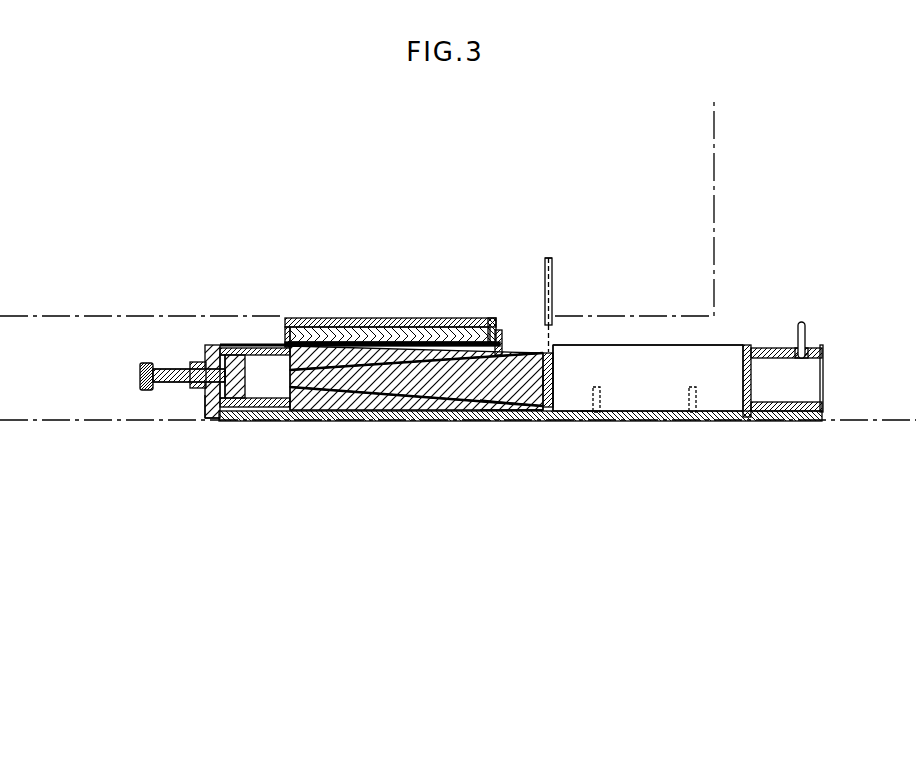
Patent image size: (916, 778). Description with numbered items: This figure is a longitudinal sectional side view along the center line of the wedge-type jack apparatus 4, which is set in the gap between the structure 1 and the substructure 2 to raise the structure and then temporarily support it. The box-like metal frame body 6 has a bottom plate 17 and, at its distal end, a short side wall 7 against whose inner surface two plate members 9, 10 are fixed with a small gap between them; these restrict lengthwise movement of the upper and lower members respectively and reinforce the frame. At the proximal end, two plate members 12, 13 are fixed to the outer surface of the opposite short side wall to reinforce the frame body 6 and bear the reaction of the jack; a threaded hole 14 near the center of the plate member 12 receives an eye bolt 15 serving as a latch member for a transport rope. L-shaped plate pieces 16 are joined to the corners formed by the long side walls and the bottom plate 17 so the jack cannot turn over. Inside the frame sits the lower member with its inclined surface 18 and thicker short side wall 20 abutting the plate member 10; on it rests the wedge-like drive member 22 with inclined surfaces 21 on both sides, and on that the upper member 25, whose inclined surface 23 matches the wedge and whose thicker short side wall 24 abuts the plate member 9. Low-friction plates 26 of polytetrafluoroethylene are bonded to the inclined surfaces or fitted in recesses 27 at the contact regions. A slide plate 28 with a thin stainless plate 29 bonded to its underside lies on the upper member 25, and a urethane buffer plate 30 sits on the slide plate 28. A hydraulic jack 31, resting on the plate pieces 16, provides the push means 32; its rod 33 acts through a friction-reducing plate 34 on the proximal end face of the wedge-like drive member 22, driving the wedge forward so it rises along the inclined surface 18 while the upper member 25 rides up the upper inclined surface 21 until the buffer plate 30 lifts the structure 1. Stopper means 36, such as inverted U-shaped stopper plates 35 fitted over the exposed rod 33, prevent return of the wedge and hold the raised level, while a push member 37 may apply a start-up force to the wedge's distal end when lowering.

The structure 1 is at (357, 206).
The substructure 2 is at (458, 491).
The wedge-type jack apparatus 4 is at (823, 292).
The frame body 6 is at (663, 423).
The short side wall 7 is at (200, 405).
The plate member 9 is at (243, 346).
The plate member 10 is at (240, 407).
The plate member 12 is at (770, 349).
The plate member 13 is at (777, 404).
The threaded hole 14 is at (823, 367).
The eye bolt 15 is at (807, 337).
The plate pieces 16 is at (599, 388).
The bottom plate 17 is at (587, 418).
The inclined surface 18 is at (421, 410).
The short side wall 20 is at (279, 403).
The inclined surfaces 21 is at (523, 345).
The wedge-like drive member 22 is at (509, 403).
The inclined surface 23 is at (323, 400).
The short side wall 24 is at (291, 361).
The upper member 25 is at (347, 318).
The low-friction plates 26 is at (385, 395).
The recesses 27 is at (443, 340).
The slide plate 28 is at (500, 332).
The stainless plate 29 is at (385, 340).
The buffer plate 30 is at (468, 317).
The hydraulic jack 31 is at (671, 354).
The push means 32 is at (627, 344).
The rod 33 is at (556, 362).
The plate 34 is at (545, 378).
The stopper plates 35 is at (552, 287).
The stopper means 36 is at (556, 257).
The push member 37 is at (186, 362).